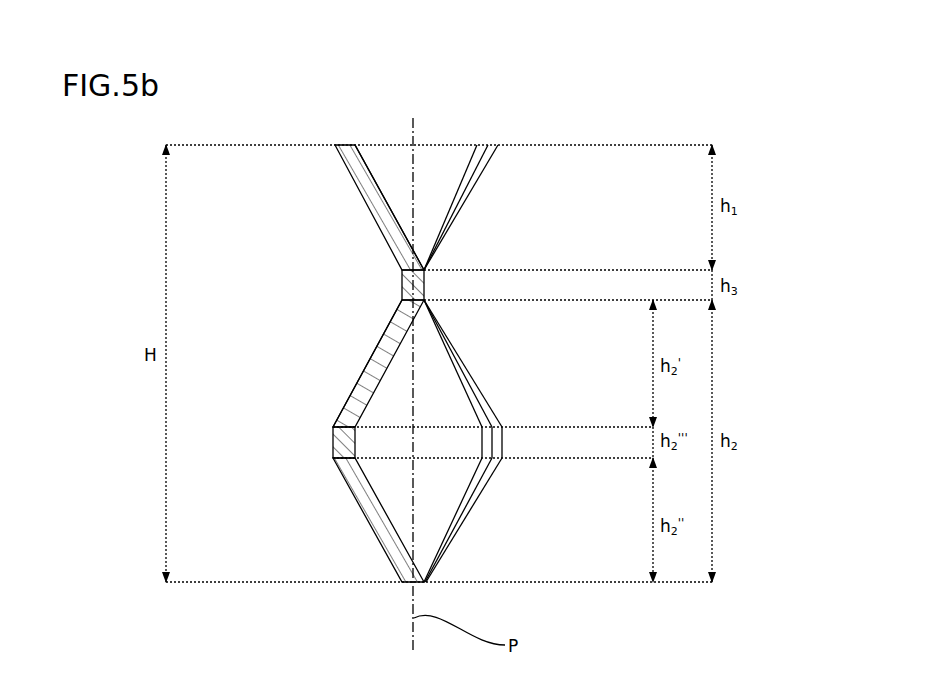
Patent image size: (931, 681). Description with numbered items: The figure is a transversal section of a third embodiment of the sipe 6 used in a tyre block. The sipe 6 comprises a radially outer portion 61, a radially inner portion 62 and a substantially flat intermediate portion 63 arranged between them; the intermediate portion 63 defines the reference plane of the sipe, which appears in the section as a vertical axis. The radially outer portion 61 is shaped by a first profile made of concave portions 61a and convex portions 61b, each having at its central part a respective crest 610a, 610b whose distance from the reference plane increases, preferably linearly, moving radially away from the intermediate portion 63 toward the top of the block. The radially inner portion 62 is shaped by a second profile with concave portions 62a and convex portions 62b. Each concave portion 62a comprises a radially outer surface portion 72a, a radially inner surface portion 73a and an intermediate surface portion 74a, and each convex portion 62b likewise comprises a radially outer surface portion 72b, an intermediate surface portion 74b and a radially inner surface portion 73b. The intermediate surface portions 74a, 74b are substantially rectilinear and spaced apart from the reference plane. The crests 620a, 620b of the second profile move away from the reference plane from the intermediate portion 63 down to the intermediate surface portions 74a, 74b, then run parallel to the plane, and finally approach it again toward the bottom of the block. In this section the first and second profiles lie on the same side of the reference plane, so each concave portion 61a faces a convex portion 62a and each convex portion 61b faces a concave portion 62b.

The sipe 6 is at (622, 118).
The radially outer portion 61 is at (285, 196).
The concave portion of the first profile 61a is at (345, 178).
The convex portion of the first profile 61b is at (490, 168).
The crest of the concave portion of the first profile 610a is at (365, 212).
The crest of the convex portion of the first profile 610b is at (470, 205).
The intermediate portion 63 is at (400, 283).
The radially inner portion 62 is at (290, 370).
The concave portion of the second profile 62a is at (350, 350).
The convex portion of the second profile 62b is at (510, 380).
The radially outer surface portion 72a is at (385, 328).
The radially outer surface portion 72b is at (465, 350).
The intermediate surface portion 74a is at (330, 447).
The intermediate surface portion 74b is at (508, 440).
The radially inner surface portion 73a is at (360, 525).
The radially inner surface portion 73b is at (465, 530).
The crest of the concave portion of the second profile 620a is at (350, 395).
The crest of the convex portion of the second profile 620b is at (487, 483).